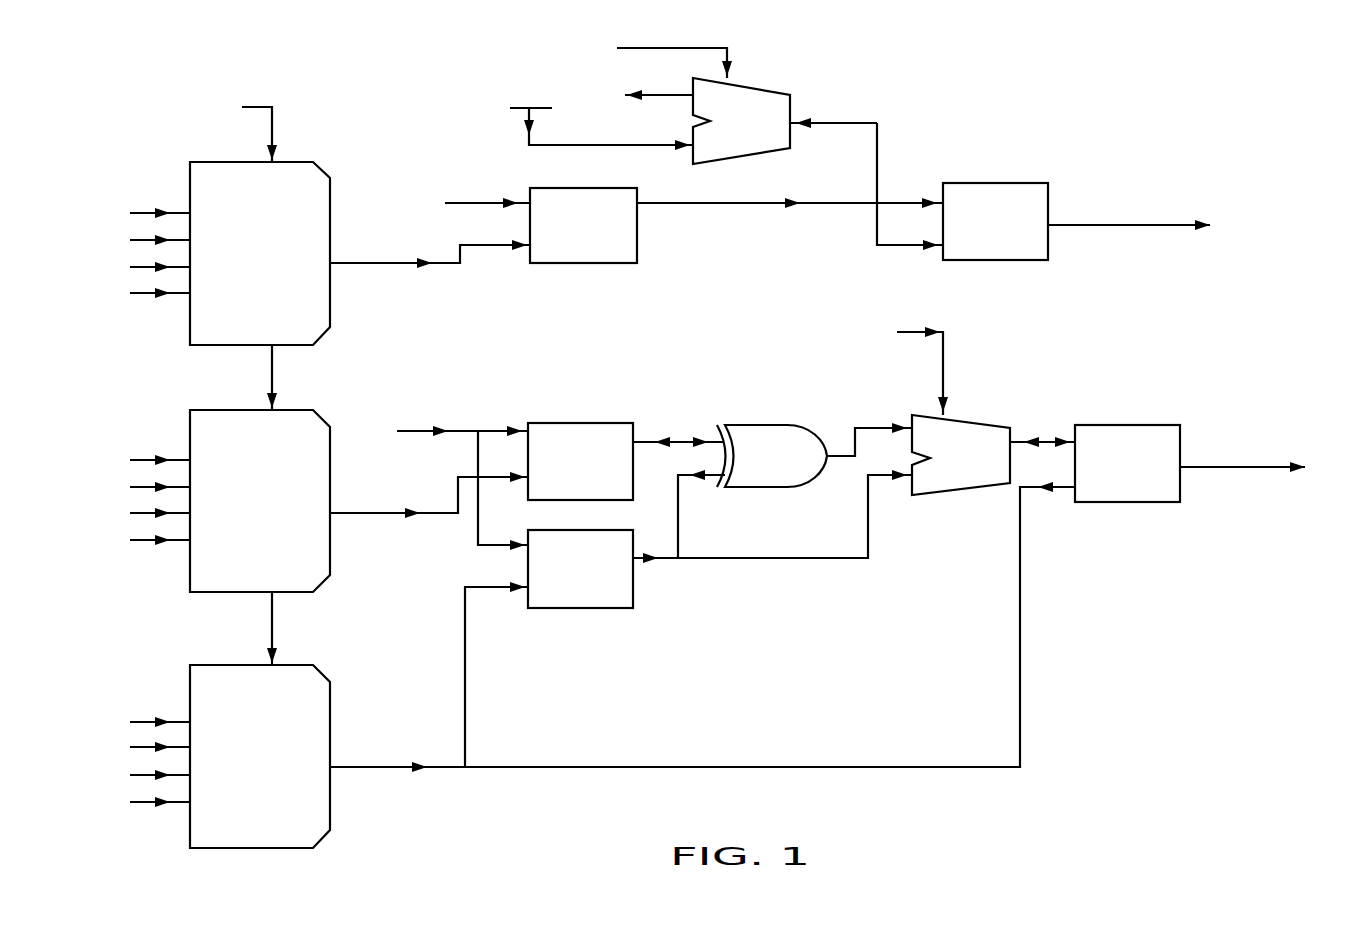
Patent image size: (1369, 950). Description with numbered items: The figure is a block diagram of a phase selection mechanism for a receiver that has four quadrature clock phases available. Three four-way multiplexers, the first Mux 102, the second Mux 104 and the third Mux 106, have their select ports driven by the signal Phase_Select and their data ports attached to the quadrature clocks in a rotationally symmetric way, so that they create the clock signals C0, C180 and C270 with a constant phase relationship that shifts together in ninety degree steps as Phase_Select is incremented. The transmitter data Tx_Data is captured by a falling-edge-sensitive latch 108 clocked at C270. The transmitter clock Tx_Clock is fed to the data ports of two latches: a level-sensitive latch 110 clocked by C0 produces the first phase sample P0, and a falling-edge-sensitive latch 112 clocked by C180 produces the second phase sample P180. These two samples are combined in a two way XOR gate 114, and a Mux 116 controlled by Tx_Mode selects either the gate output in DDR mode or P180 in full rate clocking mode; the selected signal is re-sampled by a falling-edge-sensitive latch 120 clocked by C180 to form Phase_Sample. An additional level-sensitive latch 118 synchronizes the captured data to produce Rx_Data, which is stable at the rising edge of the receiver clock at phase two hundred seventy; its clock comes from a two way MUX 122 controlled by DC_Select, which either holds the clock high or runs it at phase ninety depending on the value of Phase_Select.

The first Mux 102 is at (322, 167).
The second Mux 104 is at (205, 410).
The third Mux 106 is at (210, 665).
The falling-edge-sensitive latch 108 is at (637, 235).
The level-sensitive latch 110 is at (590, 423).
The falling-edge-sensitive latch 112 is at (528, 568).
The two way XOR gate 114 is at (785, 487).
The Mux 116 is at (968, 495).
The level-sensitive latch 118 is at (987, 183).
The falling-edge-sensitive latch 120 is at (1113, 425).
The two way MUX 122 is at (768, 82).